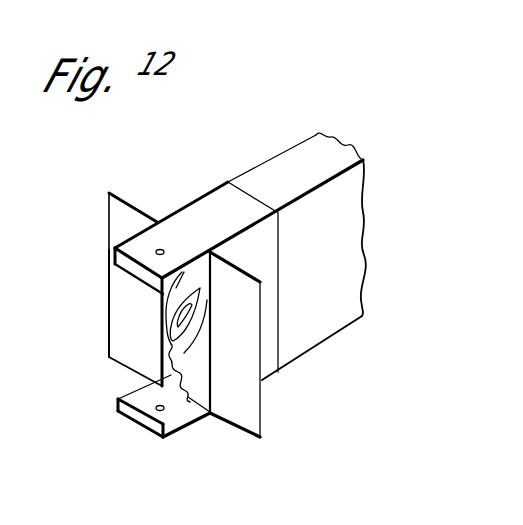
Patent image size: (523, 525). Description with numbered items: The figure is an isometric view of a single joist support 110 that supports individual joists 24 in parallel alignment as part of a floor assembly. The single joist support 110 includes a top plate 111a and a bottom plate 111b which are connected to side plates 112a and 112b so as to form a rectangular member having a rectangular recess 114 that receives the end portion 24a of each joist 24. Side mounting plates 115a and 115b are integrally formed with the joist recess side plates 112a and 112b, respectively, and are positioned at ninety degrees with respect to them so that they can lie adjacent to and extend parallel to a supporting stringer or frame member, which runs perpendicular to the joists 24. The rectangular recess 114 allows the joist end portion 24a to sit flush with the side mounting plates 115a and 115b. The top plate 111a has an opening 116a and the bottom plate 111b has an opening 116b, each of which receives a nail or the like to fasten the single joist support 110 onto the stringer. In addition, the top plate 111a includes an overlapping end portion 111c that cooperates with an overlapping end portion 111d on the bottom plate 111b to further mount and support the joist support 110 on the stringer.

The joist 24 is at (305, 152).
The joist end portion 24a is at (181, 318).
The single joist support 110 is at (267, 245).
The top plate 111a is at (217, 200).
The bottom plate 111b is at (199, 422).
The overlapping end portion 111c is at (126, 266).
The overlapping end portion 111d is at (132, 417).
The side plate 112a is at (163, 369).
The side plate 112b is at (267, 267).
The rectangular recess 114 is at (220, 290).
The side mounting plate 115a is at (115, 315).
The side mounting plate 115b is at (247, 337).
The opening 116a is at (160, 249).
The opening 116b is at (164, 408).